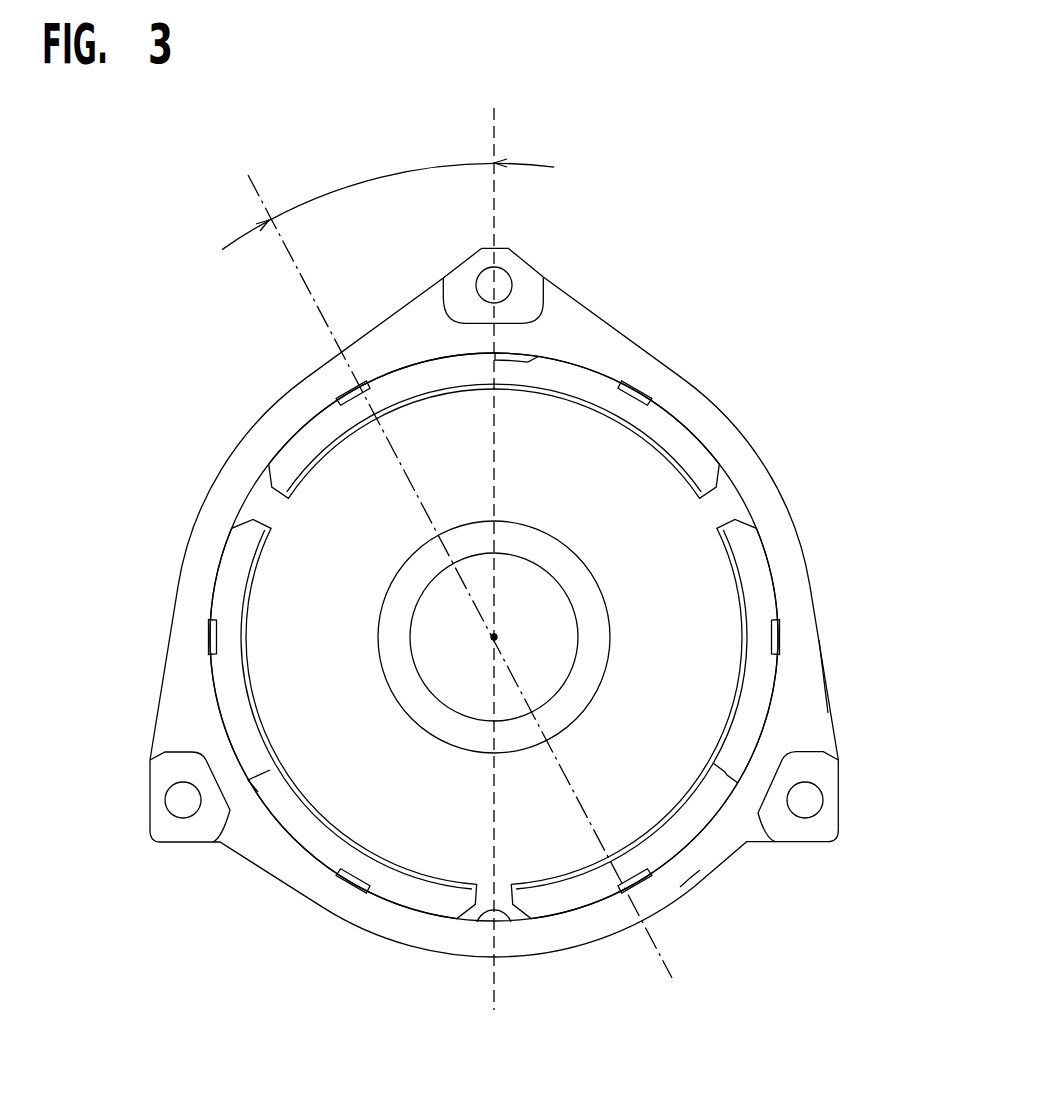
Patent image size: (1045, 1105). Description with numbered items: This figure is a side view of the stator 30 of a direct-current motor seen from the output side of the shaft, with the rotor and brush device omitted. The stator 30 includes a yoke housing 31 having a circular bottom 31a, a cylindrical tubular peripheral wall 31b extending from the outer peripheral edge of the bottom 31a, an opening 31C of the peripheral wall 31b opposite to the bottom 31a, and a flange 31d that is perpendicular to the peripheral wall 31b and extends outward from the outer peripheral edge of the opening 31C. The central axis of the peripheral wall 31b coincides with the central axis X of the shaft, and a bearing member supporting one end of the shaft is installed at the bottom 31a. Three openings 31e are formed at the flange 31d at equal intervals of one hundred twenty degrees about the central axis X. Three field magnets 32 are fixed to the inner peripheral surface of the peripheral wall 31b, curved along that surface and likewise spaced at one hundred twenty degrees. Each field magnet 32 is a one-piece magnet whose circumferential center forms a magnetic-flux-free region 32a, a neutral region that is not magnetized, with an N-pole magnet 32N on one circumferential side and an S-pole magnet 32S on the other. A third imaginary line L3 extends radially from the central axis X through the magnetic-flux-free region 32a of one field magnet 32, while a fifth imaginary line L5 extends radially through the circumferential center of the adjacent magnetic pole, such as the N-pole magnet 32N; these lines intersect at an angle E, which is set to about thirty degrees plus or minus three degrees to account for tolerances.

The stator 30 is at (232, 375).
The yoke housing 31 is at (751, 440).
The bottom 31a is at (708, 606).
The peripheral wall 31b is at (682, 887).
The opening 31C is at (474, 919).
The flange 31d is at (828, 713).
The openings 31e is at (504, 286).
The field magnets 32 is at (663, 430).
The magnetic-flux-free region 32a is at (533, 353).
The N-pole magnet 32N is at (335, 410).
The S-pole magnet 32S is at (657, 423).
The central axis X is at (497, 630).
The third imaginary line L3 is at (496, 205).
The fifth imaginary line L5 is at (255, 190).
The angle E is at (398, 167).